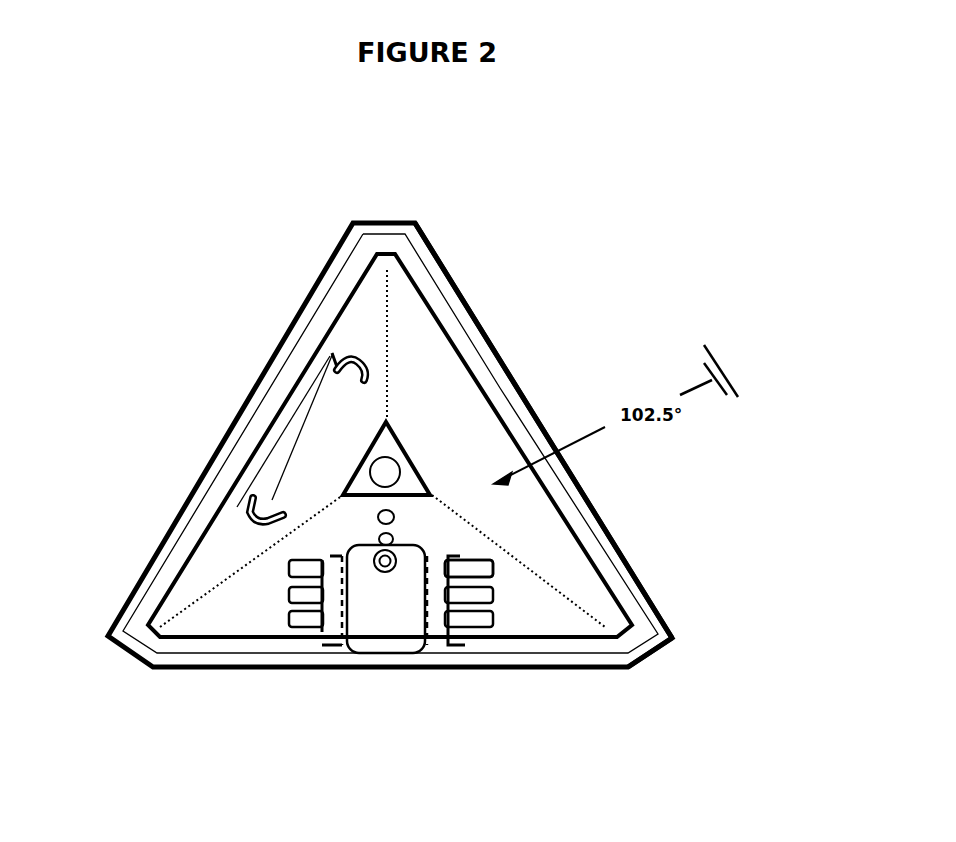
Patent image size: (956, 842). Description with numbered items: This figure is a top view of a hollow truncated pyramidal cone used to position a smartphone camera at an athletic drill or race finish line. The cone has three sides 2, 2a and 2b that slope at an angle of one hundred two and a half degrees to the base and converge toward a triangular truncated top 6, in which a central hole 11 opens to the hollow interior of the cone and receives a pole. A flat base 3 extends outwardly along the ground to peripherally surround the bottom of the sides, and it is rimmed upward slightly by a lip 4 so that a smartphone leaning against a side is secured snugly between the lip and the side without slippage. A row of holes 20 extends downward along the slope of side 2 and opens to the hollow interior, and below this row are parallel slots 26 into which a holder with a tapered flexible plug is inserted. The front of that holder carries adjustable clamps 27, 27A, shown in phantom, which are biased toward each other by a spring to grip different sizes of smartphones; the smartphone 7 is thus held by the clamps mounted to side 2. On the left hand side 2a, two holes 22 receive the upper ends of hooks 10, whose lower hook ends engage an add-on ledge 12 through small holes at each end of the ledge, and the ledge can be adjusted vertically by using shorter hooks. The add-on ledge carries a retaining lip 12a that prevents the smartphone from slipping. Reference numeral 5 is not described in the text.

The side 2 is at (268, 625).
The left hand side 2a is at (360, 333).
The side 2b is at (560, 553).
The base 3 is at (637, 627).
The lip 4 is at (655, 600).
The inner frame 5 is at (278, 547).
The truncated top 6 is at (408, 484).
The smartphone 7 is at (405, 652).
The hooks 10 is at (370, 372).
The central hole 11 is at (388, 470).
The add-on ledge 12 is at (303, 425).
The retaining lip 12a is at (275, 462).
The holes 20 is at (394, 521).
The holes 22 is at (390, 358).
The parallel slots 26 is at (492, 562).
The adjustable clamp 27 is at (440, 610).
The adjustable clamp 27A is at (330, 647).